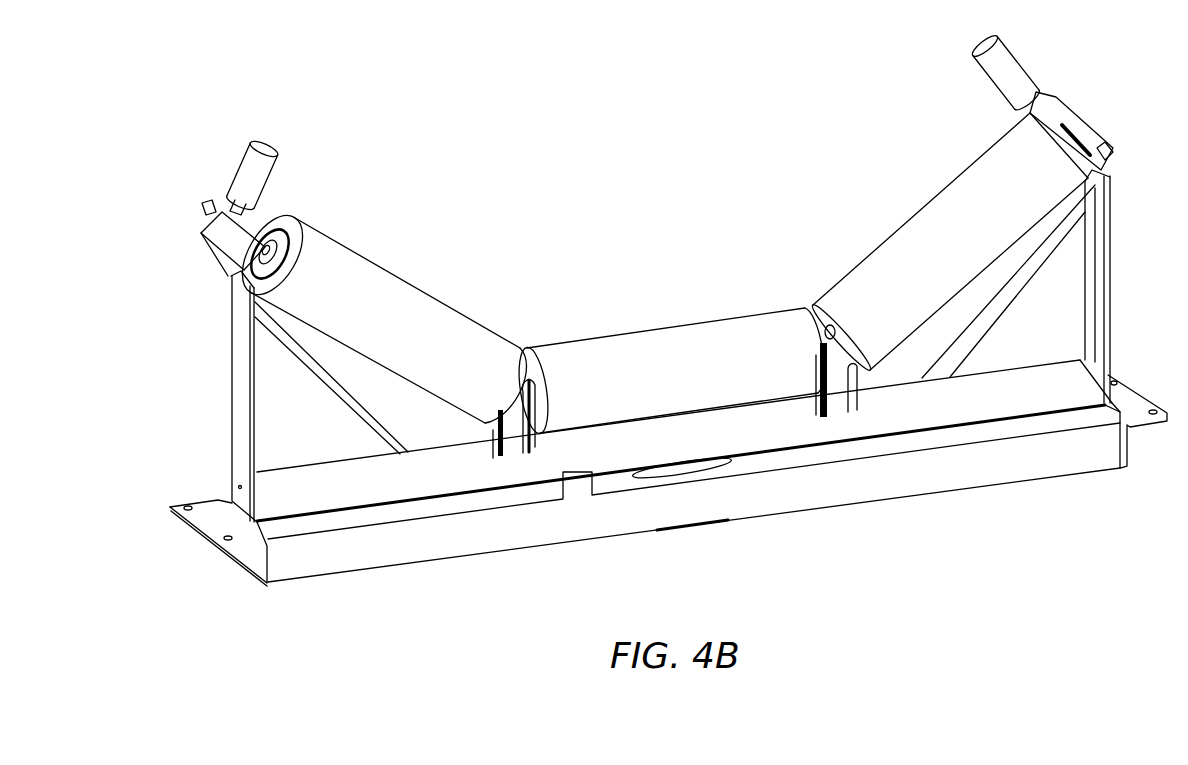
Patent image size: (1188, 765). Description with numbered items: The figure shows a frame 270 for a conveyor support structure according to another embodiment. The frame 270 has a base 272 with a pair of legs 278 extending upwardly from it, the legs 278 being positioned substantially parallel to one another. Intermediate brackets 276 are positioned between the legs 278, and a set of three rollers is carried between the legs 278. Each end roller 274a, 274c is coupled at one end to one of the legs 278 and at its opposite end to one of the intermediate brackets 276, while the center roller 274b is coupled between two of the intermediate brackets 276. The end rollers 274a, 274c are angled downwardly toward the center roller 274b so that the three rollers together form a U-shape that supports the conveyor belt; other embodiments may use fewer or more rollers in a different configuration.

The frame 270 is at (826, 119).
The base 272 is at (932, 408).
The end roller 274a is at (378, 300).
The center roller 274b is at (687, 340).
The end roller 274c is at (902, 250).
The intermediate brackets 276 is at (523, 440).
The legs 278 is at (238, 415).